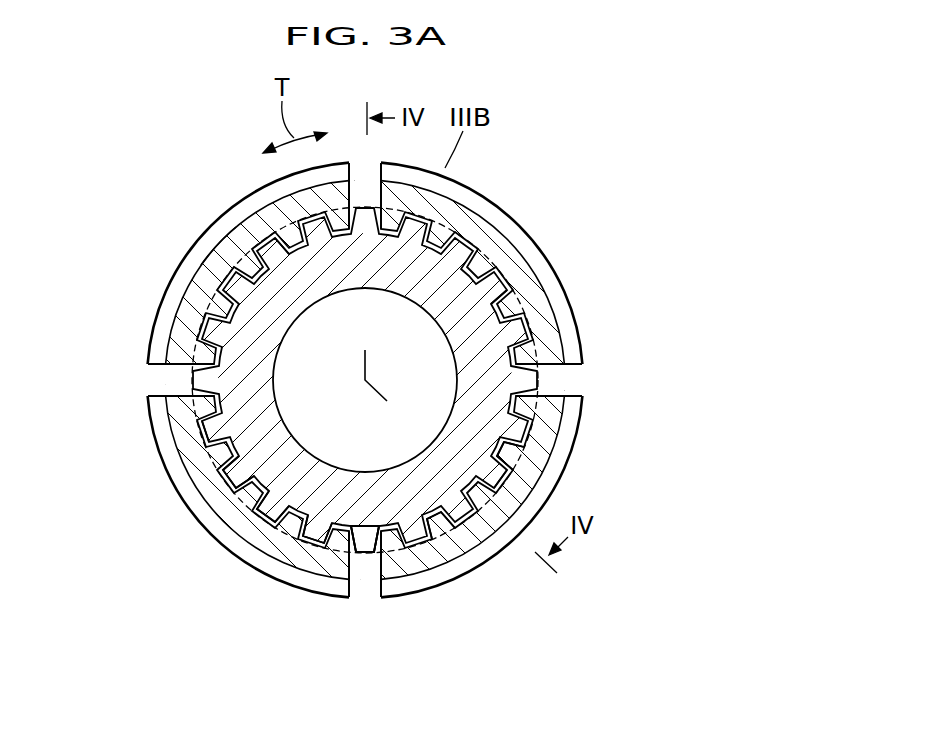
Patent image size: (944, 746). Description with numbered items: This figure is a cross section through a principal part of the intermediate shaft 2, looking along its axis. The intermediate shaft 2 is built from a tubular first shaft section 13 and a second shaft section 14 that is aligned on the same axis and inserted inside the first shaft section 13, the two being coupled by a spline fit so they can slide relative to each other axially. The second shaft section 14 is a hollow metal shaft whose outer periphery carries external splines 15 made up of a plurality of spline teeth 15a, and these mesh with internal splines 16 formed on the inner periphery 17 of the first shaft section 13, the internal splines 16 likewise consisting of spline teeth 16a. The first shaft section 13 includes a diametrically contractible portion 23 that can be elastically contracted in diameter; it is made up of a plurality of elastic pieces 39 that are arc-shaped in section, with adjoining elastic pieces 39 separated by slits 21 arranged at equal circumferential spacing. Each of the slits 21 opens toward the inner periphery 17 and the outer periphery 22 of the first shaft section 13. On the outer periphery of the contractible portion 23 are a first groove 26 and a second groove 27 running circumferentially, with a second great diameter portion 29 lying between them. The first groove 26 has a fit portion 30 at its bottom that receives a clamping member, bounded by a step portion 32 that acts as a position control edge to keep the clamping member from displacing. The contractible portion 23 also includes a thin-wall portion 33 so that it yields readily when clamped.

The intermediate shaft 2 is at (136, 225).
The first shaft section 13 is at (594, 329).
The second shaft section 14 is at (536, 436).
The external splines 15 is at (83, 457).
The spline teeth 15a is at (256, 504).
The internal splines 16 is at (133, 547).
The spline teeth 16a is at (322, 538).
The inner periphery 17 is at (532, 430).
The slits 21 is at (361, 163).
The outer periphery 22 is at (345, 598).
The diametrically contractible portion 23 is at (210, 241).
The first groove 26 is at (610, 170).
The second groove 27 is at (443, 542).
The second great diameter portion 29 is at (434, 200).
The fit portion 30 is at (503, 235).
The step portion 32 is at (487, 200).
The thin-wall portion 33 is at (462, 545).
The elastic pieces 39 is at (262, 216).